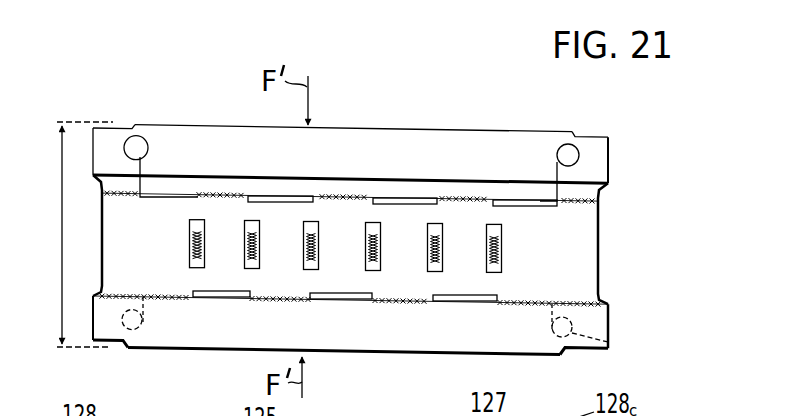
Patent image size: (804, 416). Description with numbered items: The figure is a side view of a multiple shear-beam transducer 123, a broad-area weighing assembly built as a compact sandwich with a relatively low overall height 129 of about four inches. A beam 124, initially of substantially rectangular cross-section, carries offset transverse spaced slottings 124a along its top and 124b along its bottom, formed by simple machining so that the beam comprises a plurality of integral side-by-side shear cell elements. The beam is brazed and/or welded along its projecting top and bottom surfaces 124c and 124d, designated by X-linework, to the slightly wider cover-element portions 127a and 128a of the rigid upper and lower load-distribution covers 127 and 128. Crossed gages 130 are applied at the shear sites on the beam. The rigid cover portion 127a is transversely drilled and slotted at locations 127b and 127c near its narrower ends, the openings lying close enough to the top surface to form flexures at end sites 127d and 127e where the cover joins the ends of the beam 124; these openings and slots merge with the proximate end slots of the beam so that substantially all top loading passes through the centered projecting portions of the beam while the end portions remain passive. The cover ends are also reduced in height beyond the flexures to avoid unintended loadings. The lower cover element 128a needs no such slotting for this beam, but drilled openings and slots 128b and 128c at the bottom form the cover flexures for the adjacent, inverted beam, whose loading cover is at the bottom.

The multiple shear-beam transducer 123 is at (68, 56).
The beam 124 is at (583, 252).
The top transverse spaced slottings 124a is at (509, 200).
The bottom transverse spaced slottings 124b is at (326, 299).
The projecting top surfaces 124c is at (337, 197).
The projecting bottom surfaces 124d is at (509, 302).
The upper load-distribution cover 127 is at (393, 127).
The upper cover-element portion 127a is at (520, 157).
The drilled and slotted location 127b is at (146, 162).
The drilled and slotted location 127c is at (565, 175).
The flexure end site 127d is at (128, 127).
The flexure end site 127e is at (635, 120).
The lower load-distribution cover 128 is at (342, 352).
The lower cover-element portion 128a is at (185, 335).
The drilled opening and slot 128b is at (128, 340).
The drilled opening and slot 128c is at (608, 342).
The overall height 129 is at (62, 243).
The crossed gages 130 is at (426, 246).